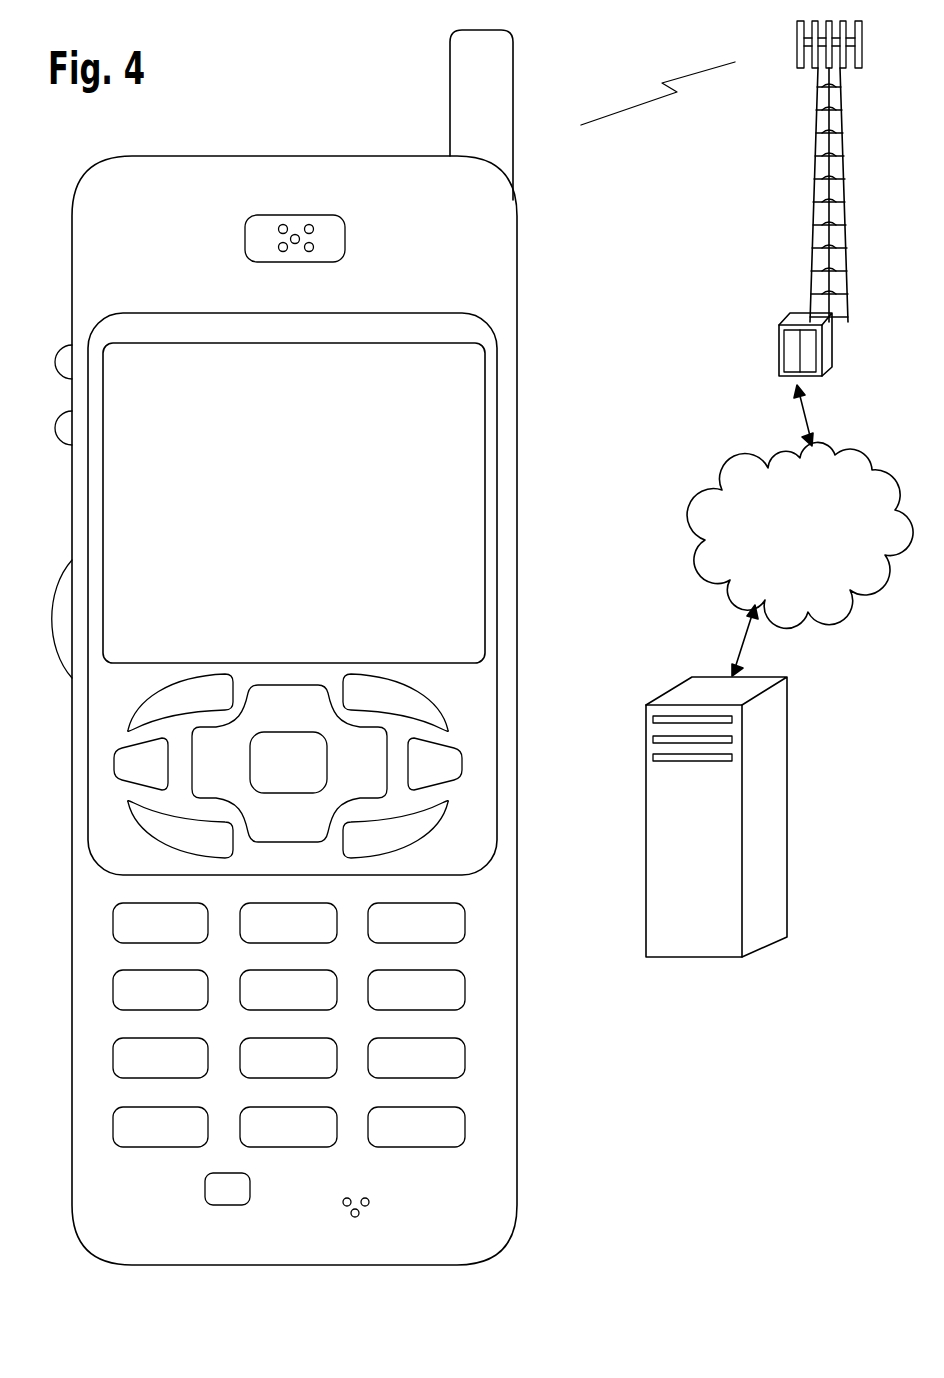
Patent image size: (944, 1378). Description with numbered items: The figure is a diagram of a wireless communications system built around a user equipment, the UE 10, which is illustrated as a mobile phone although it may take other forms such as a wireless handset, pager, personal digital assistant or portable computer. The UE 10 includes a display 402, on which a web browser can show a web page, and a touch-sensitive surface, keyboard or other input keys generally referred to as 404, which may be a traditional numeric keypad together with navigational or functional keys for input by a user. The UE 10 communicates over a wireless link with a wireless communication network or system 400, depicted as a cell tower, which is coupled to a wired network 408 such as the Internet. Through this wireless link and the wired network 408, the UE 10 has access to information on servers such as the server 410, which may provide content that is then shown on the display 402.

The UE 10 is at (118, 1263).
The wireless communication network or system 400 is at (815, 218).
The display 402 is at (488, 359).
The input keys 404 is at (526, 675).
The wired network 408 is at (714, 586).
The server 410 is at (692, 960).